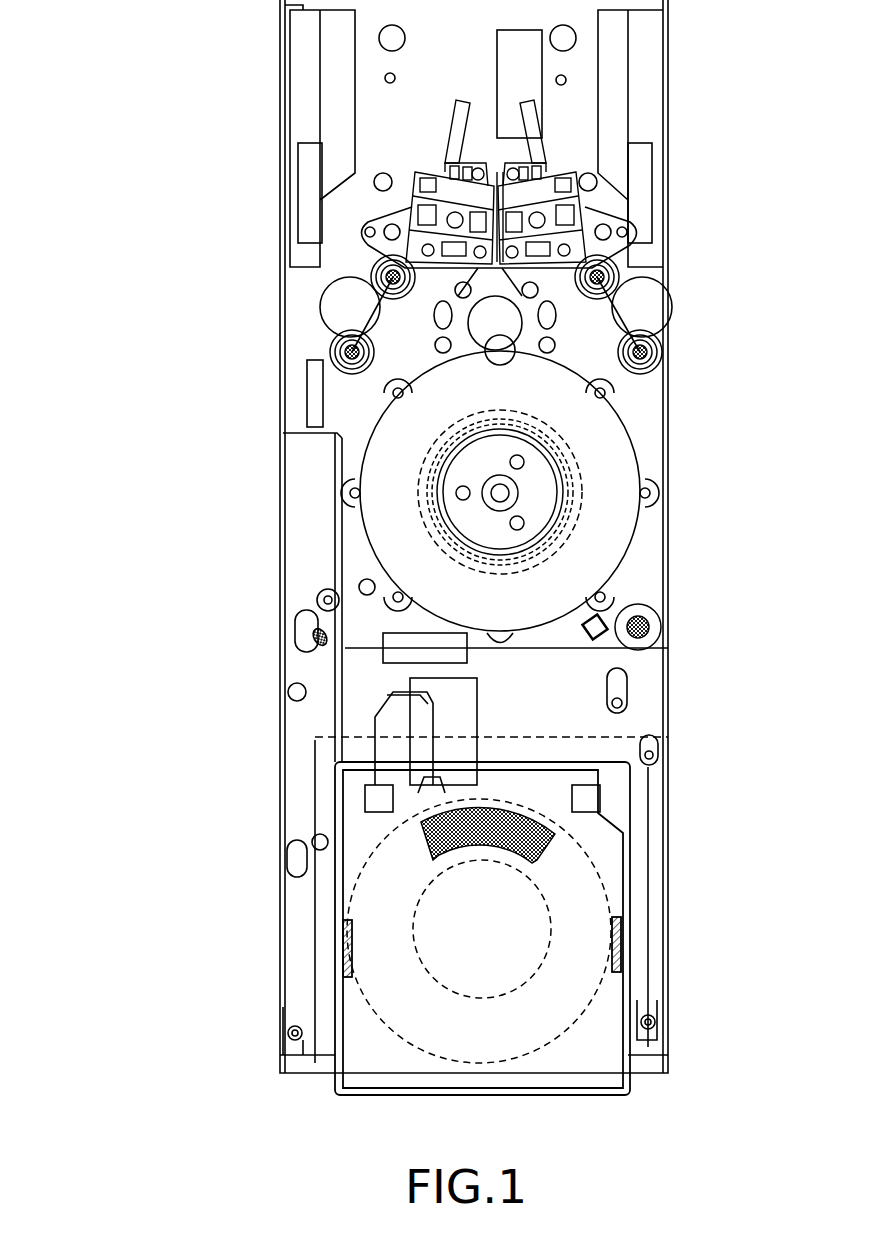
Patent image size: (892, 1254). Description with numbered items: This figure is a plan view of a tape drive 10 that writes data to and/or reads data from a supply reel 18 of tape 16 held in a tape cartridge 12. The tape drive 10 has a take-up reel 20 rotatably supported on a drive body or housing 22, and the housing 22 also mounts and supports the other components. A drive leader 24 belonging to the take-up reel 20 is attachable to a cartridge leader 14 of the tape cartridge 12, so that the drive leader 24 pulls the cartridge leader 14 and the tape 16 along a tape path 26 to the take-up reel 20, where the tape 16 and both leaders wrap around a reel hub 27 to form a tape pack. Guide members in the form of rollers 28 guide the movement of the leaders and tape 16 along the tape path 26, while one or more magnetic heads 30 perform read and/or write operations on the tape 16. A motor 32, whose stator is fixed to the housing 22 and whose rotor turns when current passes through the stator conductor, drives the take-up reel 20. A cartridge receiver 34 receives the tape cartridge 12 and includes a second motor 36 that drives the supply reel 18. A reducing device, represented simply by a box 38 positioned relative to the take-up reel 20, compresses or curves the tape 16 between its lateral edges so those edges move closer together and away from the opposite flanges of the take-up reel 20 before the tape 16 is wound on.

The tape drive 10 is at (182, 609).
The tape cartridge 12 is at (563, 1097).
The cartridge leader 14 is at (340, 738).
The tape 16 is at (540, 820).
The supply reel 18 is at (608, 852).
The take-up reel 20 is at (638, 457).
The housing 22 is at (280, 407).
The drive leader 24 is at (342, 657).
The tape path 26 is at (331, 688).
The reel hub 27 is at (545, 455).
The rollers 28 is at (345, 352).
The magnetic heads 30 is at (417, 213).
The motor 32 is at (577, 520).
The cartridge receiver 34 is at (630, 737).
The motor 36 is at (550, 920).
The reducing device 38 is at (593, 640).